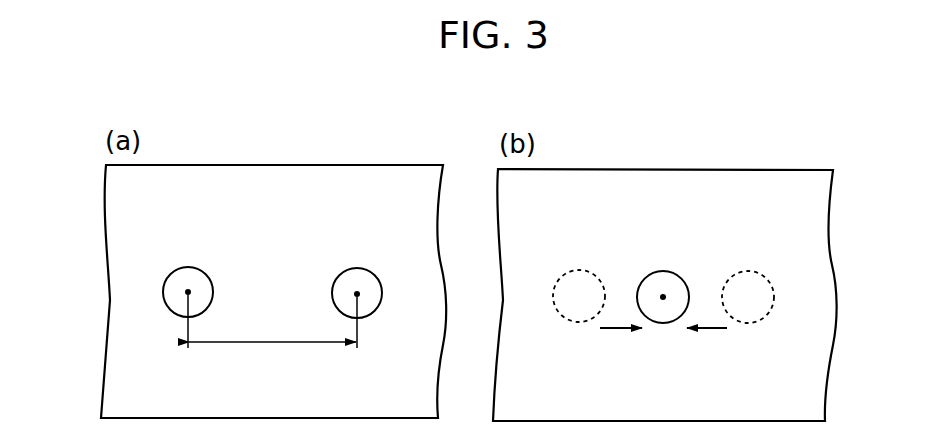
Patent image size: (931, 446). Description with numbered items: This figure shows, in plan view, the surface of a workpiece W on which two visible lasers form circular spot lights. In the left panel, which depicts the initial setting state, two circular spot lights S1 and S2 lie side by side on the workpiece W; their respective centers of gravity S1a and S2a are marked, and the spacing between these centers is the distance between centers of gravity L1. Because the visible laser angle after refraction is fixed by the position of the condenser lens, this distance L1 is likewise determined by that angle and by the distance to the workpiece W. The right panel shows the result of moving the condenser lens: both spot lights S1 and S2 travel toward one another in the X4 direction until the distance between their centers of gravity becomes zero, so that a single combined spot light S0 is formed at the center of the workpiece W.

The workpiece W is at (108, 292).
The spot light S1 is at (186, 267).
The spot light S2 is at (356, 268).
The spot light S0 is at (663, 271).
The center of gravity S1a is at (186, 293).
The center of gravity S2a is at (359, 295).
The distance between centers of gravity L1 is at (272, 321).
The direction of spot light movement X4 is at (668, 346).